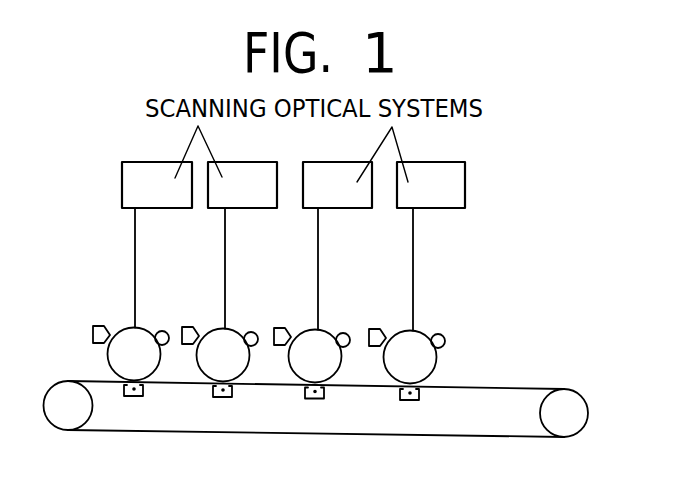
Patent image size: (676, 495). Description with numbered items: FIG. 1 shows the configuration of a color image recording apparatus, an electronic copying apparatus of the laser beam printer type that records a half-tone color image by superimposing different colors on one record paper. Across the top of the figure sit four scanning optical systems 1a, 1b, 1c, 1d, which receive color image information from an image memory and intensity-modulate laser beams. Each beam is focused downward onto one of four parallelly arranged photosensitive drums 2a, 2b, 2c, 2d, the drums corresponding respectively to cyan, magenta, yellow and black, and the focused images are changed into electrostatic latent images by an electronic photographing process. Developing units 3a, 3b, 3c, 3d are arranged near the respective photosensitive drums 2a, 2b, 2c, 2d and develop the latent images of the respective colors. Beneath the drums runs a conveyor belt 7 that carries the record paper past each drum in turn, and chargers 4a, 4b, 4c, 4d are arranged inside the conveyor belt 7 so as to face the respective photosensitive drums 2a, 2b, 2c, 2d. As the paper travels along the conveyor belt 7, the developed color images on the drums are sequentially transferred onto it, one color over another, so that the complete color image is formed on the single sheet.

The scanning optical system 1a is at (435, 166).
The scanning optical system 1b is at (338, 166).
The scanning optical system 1c is at (243, 166).
The scanning optical system 1d is at (160, 166).
The photosensitive drum 2a is at (419, 328).
The photosensitive drum 2b is at (324, 328).
The photosensitive drum 2c is at (232, 326).
The photosensitive drum 2d is at (143, 326).
The developing unit 3a is at (438, 334).
The developing unit 3b is at (343, 333).
The developing unit 3c is at (251, 332).
The developing unit 3d is at (162, 331).
The charger 4a is at (409, 401).
The charger 4b is at (314, 400).
The charger 4c is at (222, 398).
The charger 4d is at (133, 397).
The conveyor belt 7 is at (507, 387).